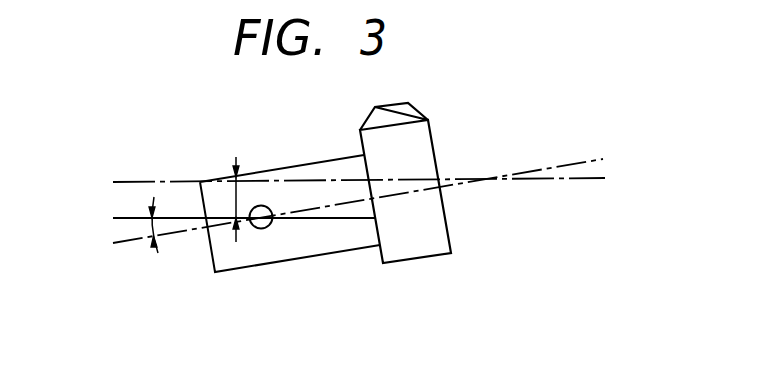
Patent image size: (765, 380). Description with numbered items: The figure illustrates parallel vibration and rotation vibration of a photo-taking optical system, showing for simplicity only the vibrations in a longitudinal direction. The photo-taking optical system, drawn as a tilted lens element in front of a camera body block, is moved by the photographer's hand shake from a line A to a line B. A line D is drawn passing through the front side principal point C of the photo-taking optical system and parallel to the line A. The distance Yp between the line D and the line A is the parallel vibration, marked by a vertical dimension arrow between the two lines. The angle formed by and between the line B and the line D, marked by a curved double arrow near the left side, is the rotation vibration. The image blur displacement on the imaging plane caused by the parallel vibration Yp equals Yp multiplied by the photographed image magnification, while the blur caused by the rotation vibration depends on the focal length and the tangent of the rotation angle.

The line A is at (348, 182).
The line B is at (347, 211).
The front side principal point C is at (265, 229).
The line D is at (233, 218).
The parallel vibration Yp is at (237, 186).